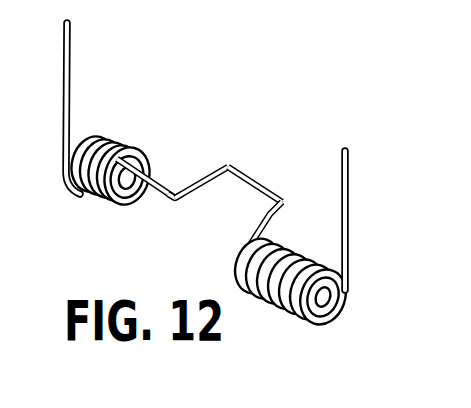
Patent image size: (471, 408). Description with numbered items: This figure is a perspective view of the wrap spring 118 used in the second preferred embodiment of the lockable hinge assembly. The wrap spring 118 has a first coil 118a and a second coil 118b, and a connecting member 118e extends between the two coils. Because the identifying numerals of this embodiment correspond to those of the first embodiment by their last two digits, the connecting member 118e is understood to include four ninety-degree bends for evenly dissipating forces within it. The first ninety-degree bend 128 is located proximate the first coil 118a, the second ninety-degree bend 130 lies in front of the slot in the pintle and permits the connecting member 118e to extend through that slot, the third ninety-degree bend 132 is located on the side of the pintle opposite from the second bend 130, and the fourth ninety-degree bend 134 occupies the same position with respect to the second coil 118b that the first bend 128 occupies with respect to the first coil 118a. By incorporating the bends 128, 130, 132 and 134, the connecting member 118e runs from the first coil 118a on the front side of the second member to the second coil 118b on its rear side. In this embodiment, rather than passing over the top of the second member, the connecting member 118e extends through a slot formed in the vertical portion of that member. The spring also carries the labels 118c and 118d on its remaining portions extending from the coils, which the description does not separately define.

The wrap spring 118 is at (268, 88).
The first coil 118a is at (92, 203).
The second coil 118b is at (275, 314).
The first arm 118c is at (70, 43).
The second arm 118d is at (349, 172).
The connecting member 118e is at (205, 178).
The first ninety-degree bend 128 is at (125, 158).
The second ninety-degree bend 130 is at (176, 205).
The third ninety-degree bend 132 is at (235, 164).
The fourth ninety-degree bend 134 is at (290, 201).